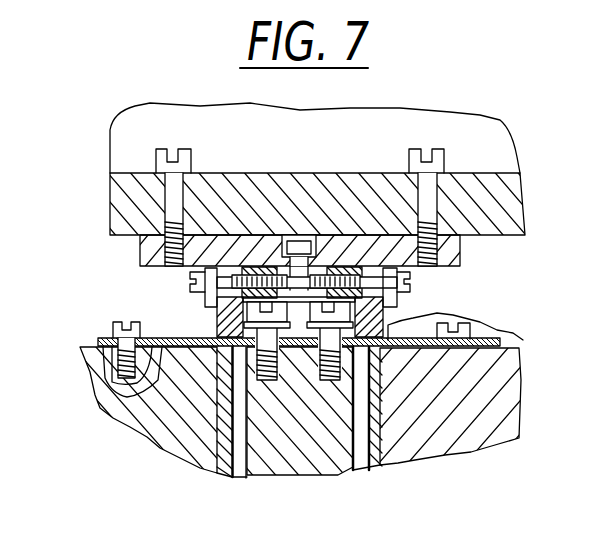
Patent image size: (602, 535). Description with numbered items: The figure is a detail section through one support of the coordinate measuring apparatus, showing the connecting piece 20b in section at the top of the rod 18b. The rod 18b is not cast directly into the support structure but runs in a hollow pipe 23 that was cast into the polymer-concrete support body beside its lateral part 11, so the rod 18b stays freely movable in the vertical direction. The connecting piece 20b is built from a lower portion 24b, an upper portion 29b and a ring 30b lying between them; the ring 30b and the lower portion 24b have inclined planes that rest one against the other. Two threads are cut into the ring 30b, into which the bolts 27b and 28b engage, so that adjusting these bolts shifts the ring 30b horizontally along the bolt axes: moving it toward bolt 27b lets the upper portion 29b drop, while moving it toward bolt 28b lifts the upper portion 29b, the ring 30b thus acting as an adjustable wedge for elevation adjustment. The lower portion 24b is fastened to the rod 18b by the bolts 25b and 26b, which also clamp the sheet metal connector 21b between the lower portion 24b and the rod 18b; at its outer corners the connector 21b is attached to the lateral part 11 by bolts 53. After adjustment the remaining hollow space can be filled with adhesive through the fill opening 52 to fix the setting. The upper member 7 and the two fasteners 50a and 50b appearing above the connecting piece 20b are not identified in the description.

The upper body / head 7 is at (518, 215).
The lateral part 11 is at (132, 418).
The rod 18b is at (290, 462).
The connecting piece 20b is at (496, 275).
The connector 21b is at (212, 337).
The hollow pipe 23 is at (375, 428).
The lower portion 24b is at (473, 339).
The bolt 25b is at (265, 380).
The bolt 26b is at (332, 380).
The bolt 27b is at (190, 286).
The bolt 28b is at (410, 287).
The upper portion 29b is at (145, 258).
The ring 30b is at (262, 268).
The left fastening screw 50a is at (157, 163).
The right fastening screw 50b is at (447, 158).
The fill opening 52 is at (306, 240).
The bolt 53 is at (112, 328).